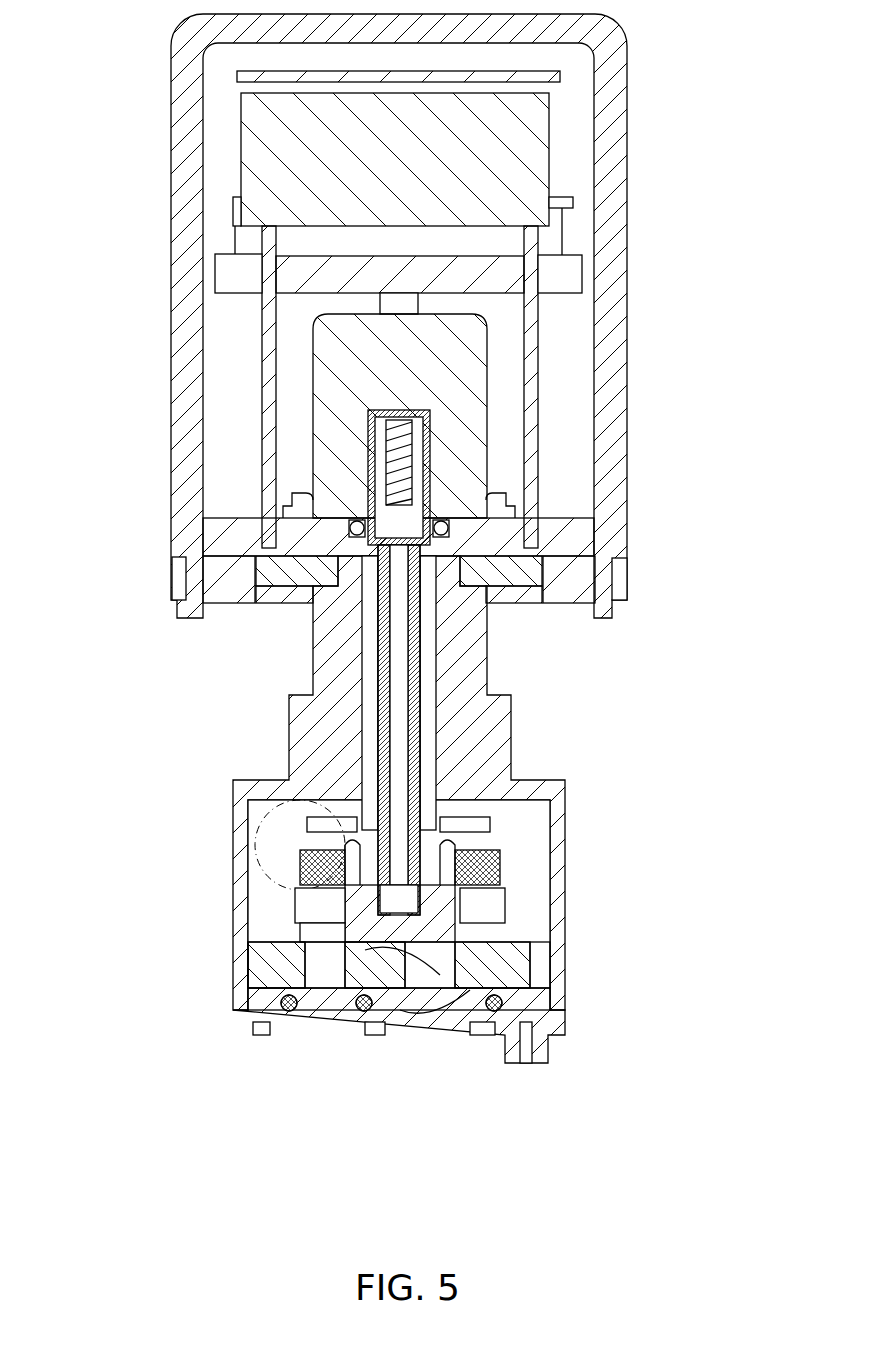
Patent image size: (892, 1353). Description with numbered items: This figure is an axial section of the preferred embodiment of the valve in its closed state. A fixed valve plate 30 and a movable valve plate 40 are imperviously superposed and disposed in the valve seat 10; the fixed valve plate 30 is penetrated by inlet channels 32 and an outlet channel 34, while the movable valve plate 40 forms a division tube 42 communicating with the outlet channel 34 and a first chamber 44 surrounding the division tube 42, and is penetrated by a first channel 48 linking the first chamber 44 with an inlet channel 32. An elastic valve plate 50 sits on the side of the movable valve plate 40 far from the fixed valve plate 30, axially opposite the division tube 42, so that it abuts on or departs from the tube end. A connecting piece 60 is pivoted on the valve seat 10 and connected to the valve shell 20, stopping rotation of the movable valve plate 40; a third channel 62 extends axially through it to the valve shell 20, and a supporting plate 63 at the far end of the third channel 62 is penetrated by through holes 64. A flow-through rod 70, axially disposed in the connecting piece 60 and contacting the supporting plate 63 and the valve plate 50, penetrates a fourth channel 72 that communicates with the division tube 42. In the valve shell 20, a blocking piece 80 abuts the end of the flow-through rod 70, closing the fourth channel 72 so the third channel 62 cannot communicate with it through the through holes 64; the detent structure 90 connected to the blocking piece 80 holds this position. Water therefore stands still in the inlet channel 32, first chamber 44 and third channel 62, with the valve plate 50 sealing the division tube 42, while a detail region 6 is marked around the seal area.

The detail region 6 is at (240, 835).
The valve seat 10 is at (247, 990).
The valve shell 20 is at (171, 215).
The fixed valve plate 30 is at (530, 956).
The inlet channel 32 is at (305, 945).
The outlet channel 34 is at (445, 965).
The movable valve plate 40 is at (550, 922).
The division tube 42 is at (330, 912).
The first chamber 44 is at (495, 905).
The first channel 48 is at (338, 930).
The valve plate 50 is at (510, 875).
The connecting piece 60 is at (312, 655).
The third channel 62 is at (430, 633).
The supporting plate 63 is at (463, 572).
The through hole 64 is at (362, 588).
The flow-through rod 70 is at (420, 678).
The fourth channel 72 is at (400, 722).
The blocking piece 80 is at (410, 545).
The detent structure 90 is at (487, 372).